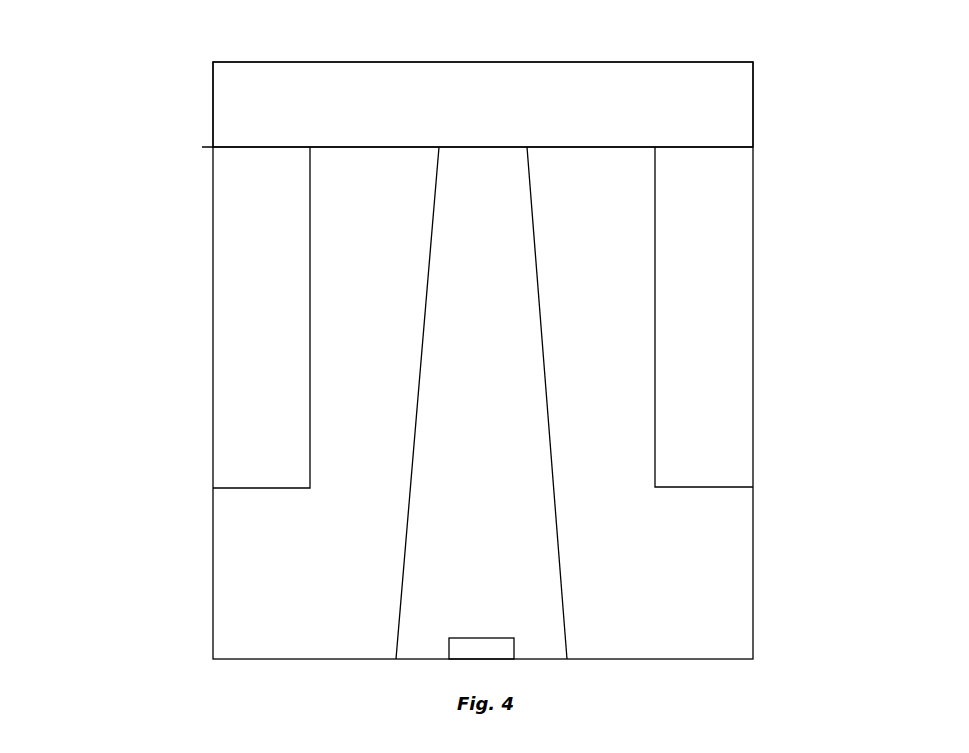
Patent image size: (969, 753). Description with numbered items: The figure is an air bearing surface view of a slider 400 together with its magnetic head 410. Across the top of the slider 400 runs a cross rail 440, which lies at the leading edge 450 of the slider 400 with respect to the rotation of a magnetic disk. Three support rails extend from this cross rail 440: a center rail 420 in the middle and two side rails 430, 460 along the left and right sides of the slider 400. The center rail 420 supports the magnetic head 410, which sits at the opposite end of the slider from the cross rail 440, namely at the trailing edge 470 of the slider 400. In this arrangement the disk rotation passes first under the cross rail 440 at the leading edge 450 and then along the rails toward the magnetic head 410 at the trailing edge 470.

The slider 400 is at (69, 608).
The magnetic head 410 is at (472, 648).
The center rail 420 is at (450, 477).
The side rail 430 is at (256, 287).
The cross rail 440 is at (257, 95).
The leading edge 450 is at (287, 62).
The side rail 460 is at (732, 308).
The trailing edge 470 is at (655, 659).